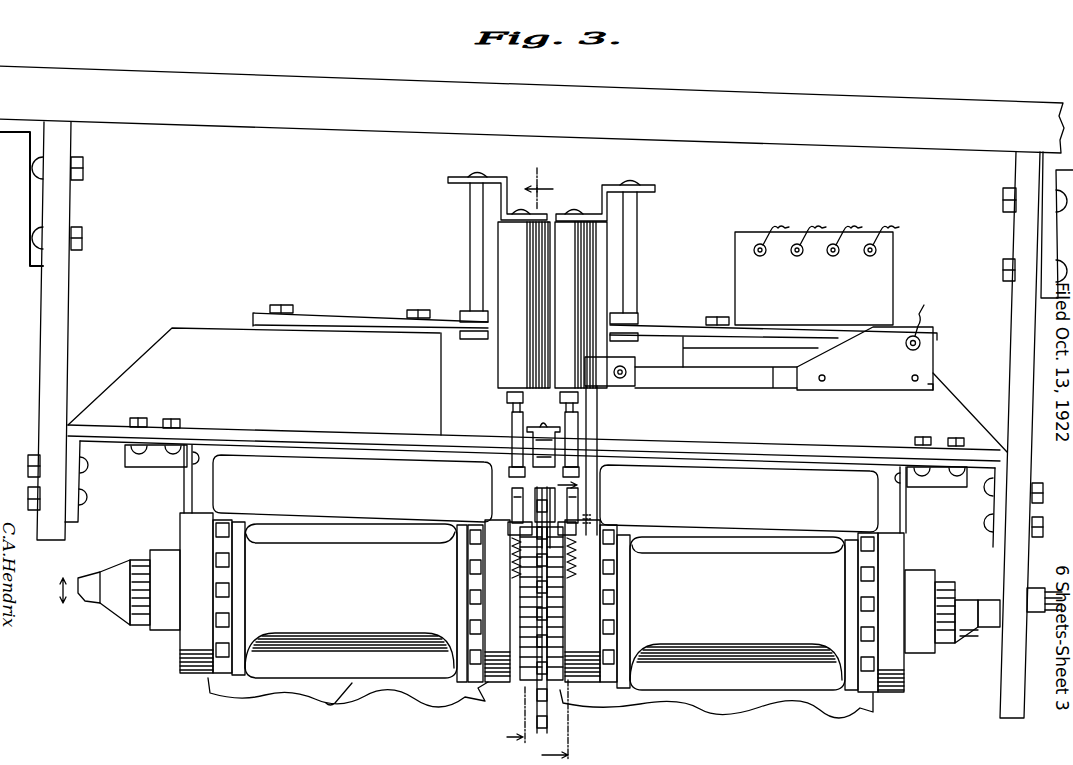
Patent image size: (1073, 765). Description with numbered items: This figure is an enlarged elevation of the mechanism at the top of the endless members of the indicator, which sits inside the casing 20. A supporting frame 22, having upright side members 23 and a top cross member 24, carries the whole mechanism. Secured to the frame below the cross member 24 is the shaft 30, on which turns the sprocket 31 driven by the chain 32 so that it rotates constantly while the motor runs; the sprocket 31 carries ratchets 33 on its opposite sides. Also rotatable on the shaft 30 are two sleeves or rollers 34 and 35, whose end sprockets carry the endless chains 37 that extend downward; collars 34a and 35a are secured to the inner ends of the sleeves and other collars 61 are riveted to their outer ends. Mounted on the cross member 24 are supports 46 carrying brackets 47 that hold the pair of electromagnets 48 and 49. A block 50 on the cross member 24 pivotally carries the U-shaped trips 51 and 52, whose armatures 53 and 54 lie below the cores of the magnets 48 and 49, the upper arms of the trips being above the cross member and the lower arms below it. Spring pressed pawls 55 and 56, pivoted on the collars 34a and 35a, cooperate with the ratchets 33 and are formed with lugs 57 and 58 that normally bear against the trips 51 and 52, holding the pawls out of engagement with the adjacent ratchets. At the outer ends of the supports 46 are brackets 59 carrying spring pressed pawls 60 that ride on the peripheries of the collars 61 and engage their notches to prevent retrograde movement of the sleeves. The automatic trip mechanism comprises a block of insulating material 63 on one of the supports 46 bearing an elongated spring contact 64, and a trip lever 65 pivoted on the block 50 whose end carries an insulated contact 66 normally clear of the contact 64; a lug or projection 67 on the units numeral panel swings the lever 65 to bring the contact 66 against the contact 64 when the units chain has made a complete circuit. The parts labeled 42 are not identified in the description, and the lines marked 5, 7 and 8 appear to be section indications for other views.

The section line 5 is at (117, 590).
The section line 7 is at (550, 617).
The section line 8 is at (529, 459).
The casing 20 is at (841, 100).
The supporting frame 22 is at (55, 360).
The upright side members 23 is at (60, 311).
The top cross member 24 is at (283, 432).
The shaft 30 is at (947, 582).
The rotatable sprocket 31 is at (560, 645).
The chain 32 is at (527, 700).
The ratchets 33 is at (527, 597).
The sleeve or roller 34 is at (349, 613).
The collar 34a is at (487, 687).
The sleeve or roller 35 is at (737, 612).
The collar 35a is at (716, 724).
The endless chains 37 is at (222, 620).
The cylinder head 42 is at (545, 493).
The supports 46 is at (537, 390).
The brackets 47 is at (435, 318).
The electromagnet 48 is at (517, 257).
The electromagnet 49 is at (590, 255).
The block 50 is at (543, 433).
The U-shaped trip 51 is at (512, 420).
The U-shaped trip 52 is at (578, 420).
The armature 53 is at (507, 397).
The armature 54 is at (580, 407).
The spring pressed pawl 55 is at (513, 512).
The spring pressed pawl 56 is at (613, 523).
The lug 57 is at (513, 493).
The lug 58 is at (580, 500).
The brackets 59 is at (130, 465).
The spring pressed pawls 60 is at (184, 482).
The collars 61 is at (188, 522).
The block of insulating material 63 is at (933, 392).
The elongated spring contact 64 is at (743, 382).
The trip lever 65 is at (590, 443).
The insulated contact 66 is at (608, 367).
The lug or projection 67 is at (590, 507).